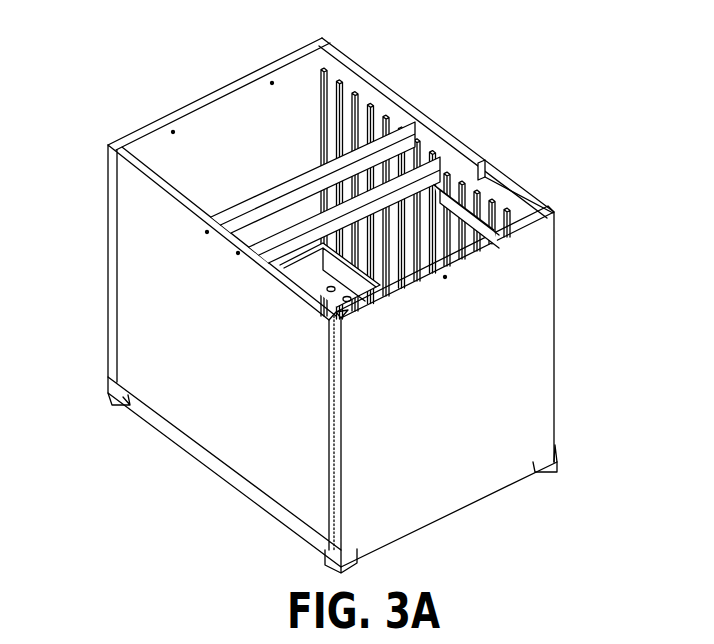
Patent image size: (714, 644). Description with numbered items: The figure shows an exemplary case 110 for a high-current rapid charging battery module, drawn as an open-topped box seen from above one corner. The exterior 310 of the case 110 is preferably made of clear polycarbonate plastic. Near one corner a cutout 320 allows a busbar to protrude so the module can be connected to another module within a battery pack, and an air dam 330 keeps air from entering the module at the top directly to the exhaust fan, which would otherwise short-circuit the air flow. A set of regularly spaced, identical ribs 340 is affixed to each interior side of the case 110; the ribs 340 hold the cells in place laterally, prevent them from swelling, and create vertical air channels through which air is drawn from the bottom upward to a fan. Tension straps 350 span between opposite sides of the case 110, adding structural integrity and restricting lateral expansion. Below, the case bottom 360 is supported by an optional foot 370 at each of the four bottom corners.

The case 110 is at (345, 296).
The exterior 310 is at (170, 352).
The cutout 320 is at (297, 300).
The air dam 330 is at (347, 273).
The ribs 340 is at (350, 128).
The tension straps 350 is at (425, 162).
The case bottom 360 is at (453, 499).
The foot 370 is at (550, 466).